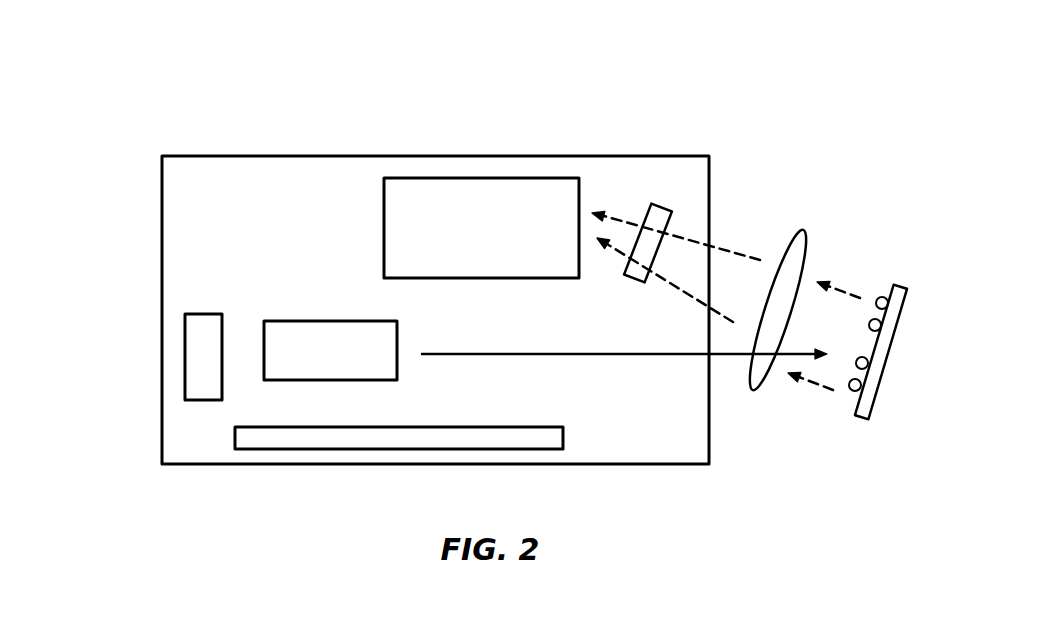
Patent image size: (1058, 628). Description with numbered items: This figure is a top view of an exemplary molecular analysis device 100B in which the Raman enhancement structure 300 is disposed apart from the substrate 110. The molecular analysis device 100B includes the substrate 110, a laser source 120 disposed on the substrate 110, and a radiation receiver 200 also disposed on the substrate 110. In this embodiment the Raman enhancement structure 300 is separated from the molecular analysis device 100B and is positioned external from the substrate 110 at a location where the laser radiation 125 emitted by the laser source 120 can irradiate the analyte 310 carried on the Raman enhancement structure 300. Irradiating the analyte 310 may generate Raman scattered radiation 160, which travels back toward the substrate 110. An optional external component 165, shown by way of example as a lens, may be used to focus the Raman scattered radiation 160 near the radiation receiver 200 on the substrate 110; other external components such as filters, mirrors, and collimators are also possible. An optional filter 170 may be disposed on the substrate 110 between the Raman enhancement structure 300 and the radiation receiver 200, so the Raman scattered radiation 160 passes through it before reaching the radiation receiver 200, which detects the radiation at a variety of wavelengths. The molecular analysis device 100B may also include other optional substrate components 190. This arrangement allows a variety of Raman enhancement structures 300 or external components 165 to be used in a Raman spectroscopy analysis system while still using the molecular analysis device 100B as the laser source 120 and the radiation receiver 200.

The molecular analysis device 100B is at (115, 70).
The substrate 110 is at (550, 156).
The laser source 120 is at (272, 321).
The laser radiation 125 is at (487, 355).
The Raman scattered radiation 160 is at (733, 322).
The optional external component 165 is at (806, 232).
The optional filter 170 is at (660, 205).
The optional substrate components 190 is at (183, 353).
The radiation receiver 200 is at (407, 178).
The Raman enhancement structure 300 is at (878, 393).
The analyte 310 is at (848, 388).